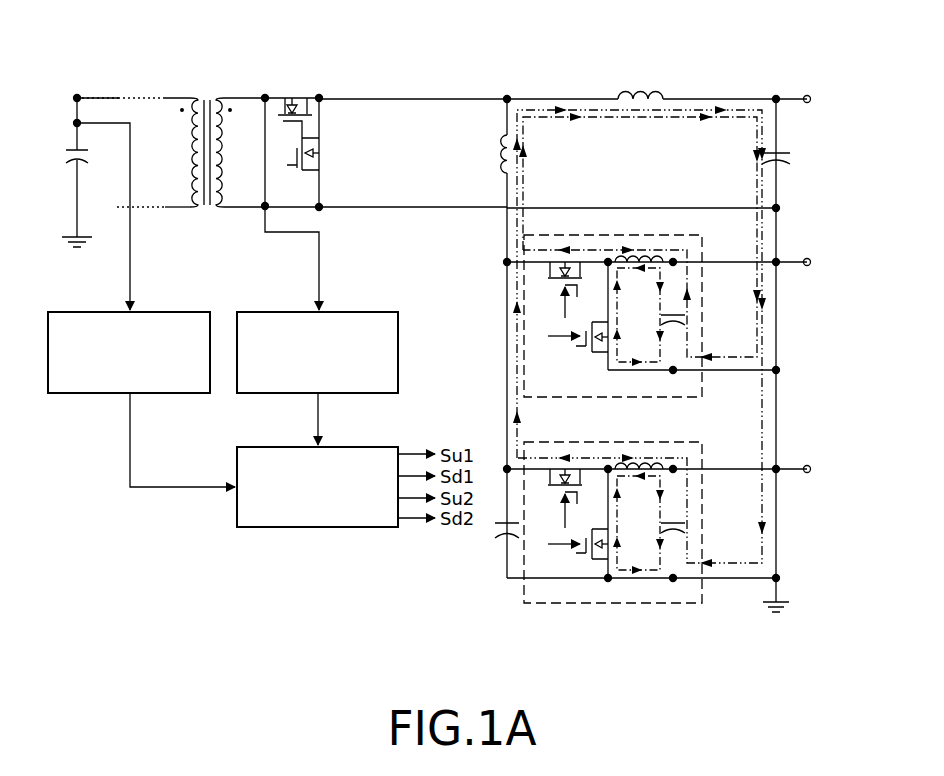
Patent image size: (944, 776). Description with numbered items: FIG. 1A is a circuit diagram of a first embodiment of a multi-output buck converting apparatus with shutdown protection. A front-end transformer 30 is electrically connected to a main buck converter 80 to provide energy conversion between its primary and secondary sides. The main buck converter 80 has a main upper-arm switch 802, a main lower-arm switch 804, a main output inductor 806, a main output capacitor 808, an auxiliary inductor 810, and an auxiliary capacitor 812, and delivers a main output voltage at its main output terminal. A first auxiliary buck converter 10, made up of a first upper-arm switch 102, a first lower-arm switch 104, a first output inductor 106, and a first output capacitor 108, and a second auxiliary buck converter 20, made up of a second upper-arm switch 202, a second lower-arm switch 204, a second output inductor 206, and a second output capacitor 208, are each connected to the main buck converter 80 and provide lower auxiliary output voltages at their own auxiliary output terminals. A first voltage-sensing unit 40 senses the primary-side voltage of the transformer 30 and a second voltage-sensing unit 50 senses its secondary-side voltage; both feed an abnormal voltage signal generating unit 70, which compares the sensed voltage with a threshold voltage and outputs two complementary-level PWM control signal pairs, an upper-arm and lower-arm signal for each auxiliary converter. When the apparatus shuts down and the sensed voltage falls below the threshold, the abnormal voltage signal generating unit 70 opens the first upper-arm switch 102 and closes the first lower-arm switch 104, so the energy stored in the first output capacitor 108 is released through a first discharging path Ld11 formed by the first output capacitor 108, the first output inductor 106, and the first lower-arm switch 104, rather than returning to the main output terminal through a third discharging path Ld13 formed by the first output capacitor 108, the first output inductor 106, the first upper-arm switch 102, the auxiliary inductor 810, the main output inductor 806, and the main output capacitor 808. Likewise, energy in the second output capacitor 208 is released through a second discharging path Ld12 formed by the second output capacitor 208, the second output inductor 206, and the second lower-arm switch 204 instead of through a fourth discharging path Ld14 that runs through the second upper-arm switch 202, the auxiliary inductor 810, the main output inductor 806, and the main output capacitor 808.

The front-end transformer 30 is at (205, 97).
The main upper-arm switch 802 is at (285, 97).
The main lower-arm switch 804 is at (320, 147).
The main output inductor 806 is at (643, 93).
The main output capacitor 808 is at (782, 160).
The auxiliary inductor 810 is at (498, 157).
The auxiliary capacitor 812 is at (505, 533).
The main buck converter 80 is at (708, 92).
The first auxiliary buck converter 10 is at (680, 235).
The second auxiliary buck converter 20 is at (633, 593).
The first upper-arm switch 102 is at (550, 279).
The first lower-arm switch 104 is at (589, 350).
The first output inductor 106 is at (642, 256).
The first output capacitor 108 is at (684, 325).
The second upper-arm switch 202 is at (540, 487).
The second lower-arm switch 204 is at (588, 558).
The second output inductor 206 is at (641, 462).
The second output capacitor 208 is at (684, 533).
The first voltage-sensing unit 40 is at (115, 312).
The second voltage-sensing unit 50 is at (335, 312).
The abnormal voltage signal generating unit 70 is at (335, 447).
The first discharging path Ld11 is at (655, 364).
The second discharging path Ld12 is at (655, 572).
The third discharging path Ld13 is at (598, 235).
The fourth discharging path Ld14 is at (517, 432).